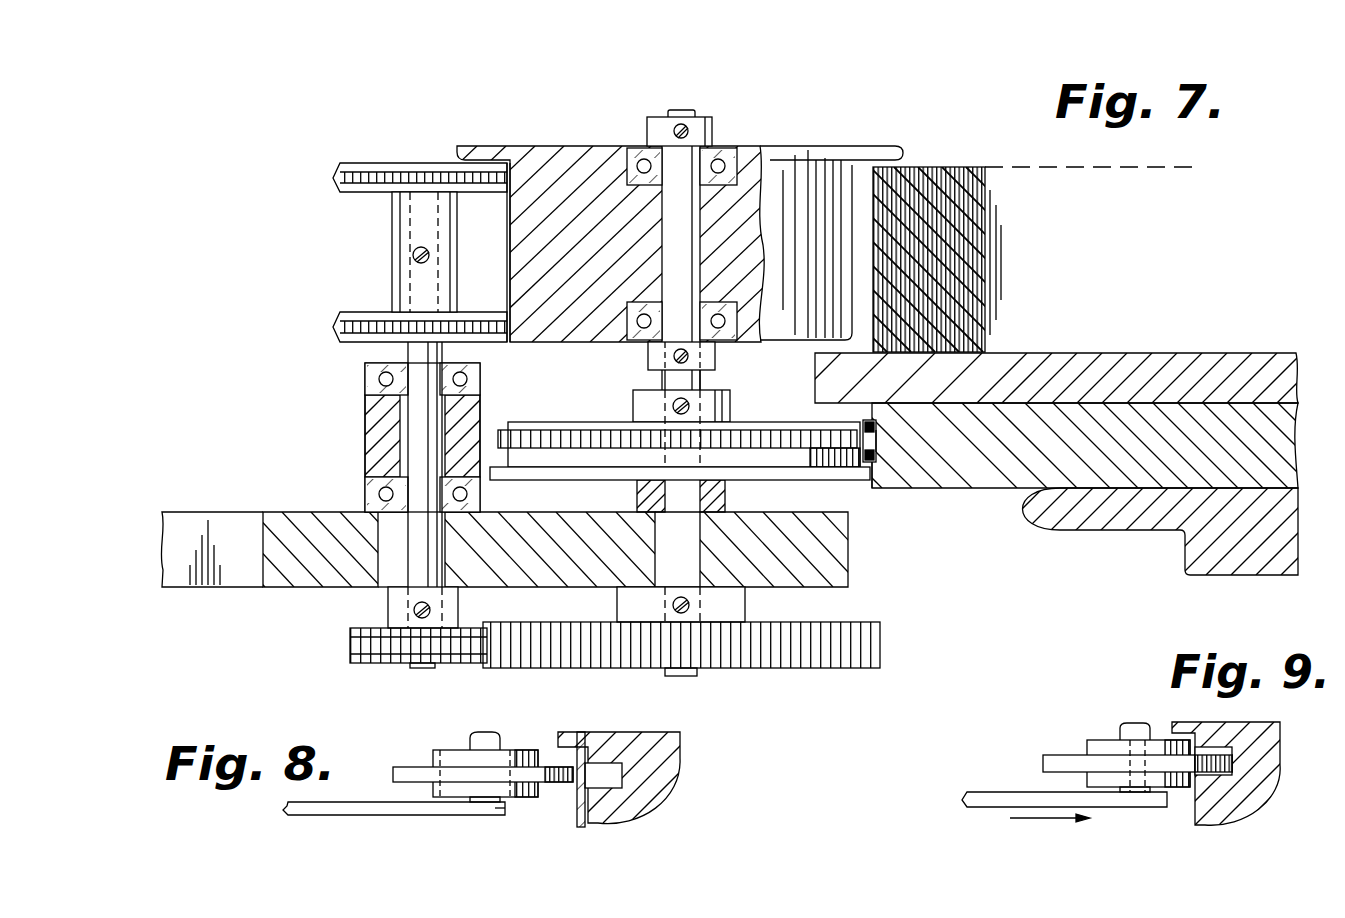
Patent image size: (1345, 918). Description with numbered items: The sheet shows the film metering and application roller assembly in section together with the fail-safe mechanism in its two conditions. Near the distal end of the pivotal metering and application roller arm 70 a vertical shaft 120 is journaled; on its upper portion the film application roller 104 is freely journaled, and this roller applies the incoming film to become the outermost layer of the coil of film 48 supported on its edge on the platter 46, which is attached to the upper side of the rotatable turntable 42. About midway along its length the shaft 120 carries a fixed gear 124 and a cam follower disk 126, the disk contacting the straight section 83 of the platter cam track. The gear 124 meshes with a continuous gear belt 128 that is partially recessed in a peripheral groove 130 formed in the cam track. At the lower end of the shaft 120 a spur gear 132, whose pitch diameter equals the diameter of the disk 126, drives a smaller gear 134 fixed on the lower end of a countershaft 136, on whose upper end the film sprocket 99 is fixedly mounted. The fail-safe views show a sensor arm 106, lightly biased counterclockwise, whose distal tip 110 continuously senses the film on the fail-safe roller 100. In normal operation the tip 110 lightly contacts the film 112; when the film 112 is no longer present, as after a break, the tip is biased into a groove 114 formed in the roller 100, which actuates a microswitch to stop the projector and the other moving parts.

In FIG. 7, the film application roller 104 is at (556, 170).
In FIG. 7, the film 48 is at (957, 166).
In FIG. 7, the film sprocket 99 is at (395, 237).
In FIG. 7, the film 112 is at (508, 244).
In FIG. 8, the film 112 is at (577, 806).
In FIG. 7, the platter 46 is at (1176, 349).
In FIG. 7, the turntable 42 is at (1112, 512).
In FIG. 7, the gear belt 128 is at (887, 422).
In FIG. 7, the peripheral groove 130 is at (880, 445).
In FIG. 7, the straight section 83 is at (870, 490).
In FIG. 7, the metering and application roller arm 70 is at (233, 508).
In FIG. 7, the countershaft 136 is at (420, 525).
In FIG. 7, the gear 134 is at (355, 640).
In FIG. 7, the vertical shaft 120 is at (670, 382).
In FIG. 7, the gear 124 is at (757, 440).
In FIG. 7, the cam follower disk 126 is at (548, 473).
In FIG. 7, the spur gear 132 is at (845, 636).
In FIG. 8, the sensor arm 106 is at (358, 808).
In FIG. 9, the sensor arm 106 is at (990, 795).
In FIG. 8, the distal tip 110 is at (425, 772).
In FIG. 9, the distal tip 110 is at (1065, 760).
In FIG. 8, the groove 114 is at (613, 770).
In FIG. 9, the groove 114 is at (1235, 755).
In FIG. 8, the fail-safe roller 100 is at (640, 800).
In FIG. 9, the fail-safe roller 100 is at (1225, 805).